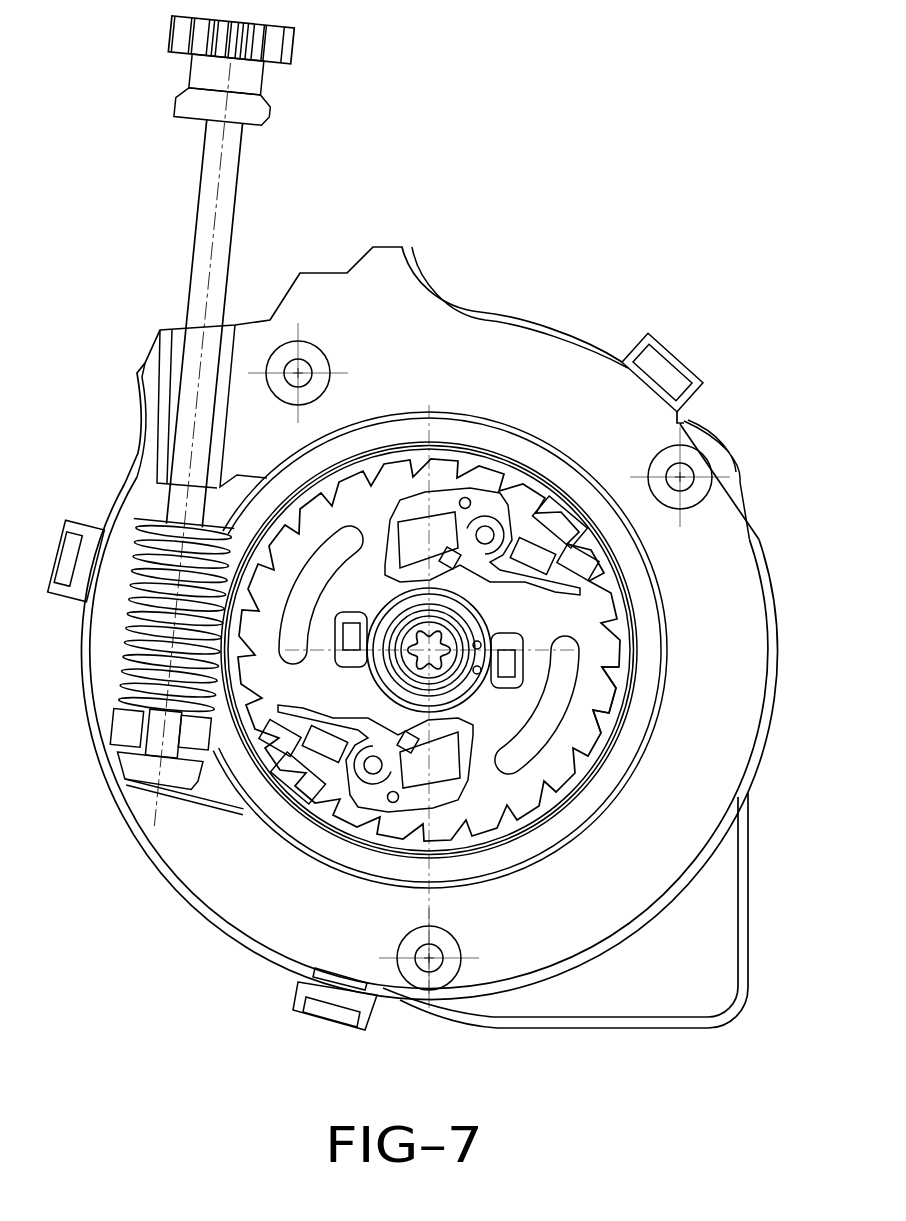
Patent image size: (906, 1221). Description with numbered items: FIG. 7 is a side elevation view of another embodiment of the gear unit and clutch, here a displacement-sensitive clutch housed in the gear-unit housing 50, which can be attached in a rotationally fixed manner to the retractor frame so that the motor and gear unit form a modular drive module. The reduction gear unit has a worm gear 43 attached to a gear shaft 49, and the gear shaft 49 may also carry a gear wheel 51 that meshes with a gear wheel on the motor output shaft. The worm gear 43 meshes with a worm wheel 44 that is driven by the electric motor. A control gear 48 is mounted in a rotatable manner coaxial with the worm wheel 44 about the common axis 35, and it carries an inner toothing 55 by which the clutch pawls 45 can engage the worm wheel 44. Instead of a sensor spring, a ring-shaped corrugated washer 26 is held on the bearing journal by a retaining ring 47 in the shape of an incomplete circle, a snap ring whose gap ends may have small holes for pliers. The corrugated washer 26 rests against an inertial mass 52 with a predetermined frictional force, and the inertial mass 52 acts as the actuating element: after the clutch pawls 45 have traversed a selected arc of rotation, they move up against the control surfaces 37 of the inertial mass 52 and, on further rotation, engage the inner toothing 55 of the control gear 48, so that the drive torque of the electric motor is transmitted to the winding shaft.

The corrugated washer 26 is at (448, 600).
The common axis 35 is at (432, 650).
The control surfaces 37 is at (280, 713).
The worm gear 43 is at (145, 666).
The worm wheel 44 is at (292, 822).
The clutch pawls 45 is at (590, 567).
The retaining ring 47 is at (403, 685).
The control gear 48 is at (453, 450).
The gear shaft 49 is at (197, 262).
The gear-unit housing 50 is at (680, 838).
The gear wheel 51 is at (272, 44).
The inertial mass 52 is at (487, 782).
The inner toothing 55 is at (610, 687).